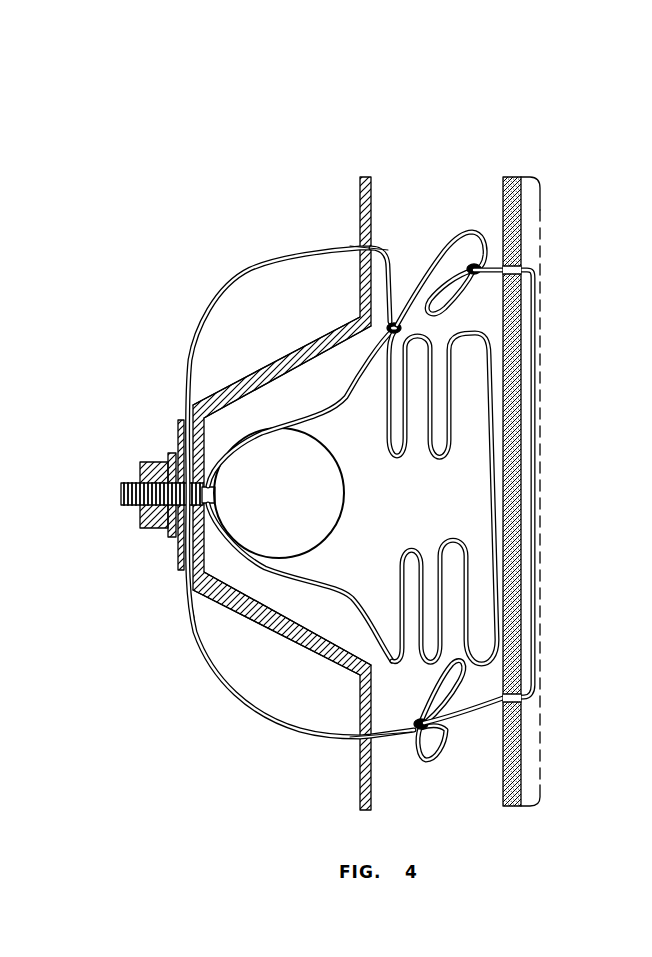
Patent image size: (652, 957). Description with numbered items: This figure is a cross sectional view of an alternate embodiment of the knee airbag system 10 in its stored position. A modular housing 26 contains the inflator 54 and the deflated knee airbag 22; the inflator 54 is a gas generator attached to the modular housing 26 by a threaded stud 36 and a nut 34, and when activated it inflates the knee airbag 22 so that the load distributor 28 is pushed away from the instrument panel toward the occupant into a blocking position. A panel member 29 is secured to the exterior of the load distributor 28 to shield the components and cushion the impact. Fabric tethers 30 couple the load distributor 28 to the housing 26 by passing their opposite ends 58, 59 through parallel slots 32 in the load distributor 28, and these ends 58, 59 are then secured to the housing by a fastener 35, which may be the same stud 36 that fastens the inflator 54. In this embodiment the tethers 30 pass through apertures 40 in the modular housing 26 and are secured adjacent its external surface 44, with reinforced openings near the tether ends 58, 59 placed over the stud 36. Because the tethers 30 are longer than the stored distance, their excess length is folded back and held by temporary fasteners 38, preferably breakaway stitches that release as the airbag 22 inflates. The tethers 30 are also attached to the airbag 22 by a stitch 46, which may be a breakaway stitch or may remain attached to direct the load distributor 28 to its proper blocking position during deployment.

The knee airbag system 10 is at (573, 158).
The knee airbag 22 is at (467, 334).
The modular housing 26 is at (360, 183).
The load distributor 28 is at (512, 790).
The panel member 29 is at (516, 213).
The tethers 30 is at (228, 278).
The slots 32 is at (512, 270).
The nut 34 is at (157, 462).
The fastener 35 is at (130, 468).
The threaded stud 36 is at (127, 510).
The temporary fasteners 38 is at (473, 258).
The apertures 40 is at (365, 245).
The external surface 44 is at (267, 626).
The stitch 46 is at (397, 318).
The inflator 54 is at (291, 502).
The tether end 58 is at (184, 425).
The tether end 59 is at (187, 598).